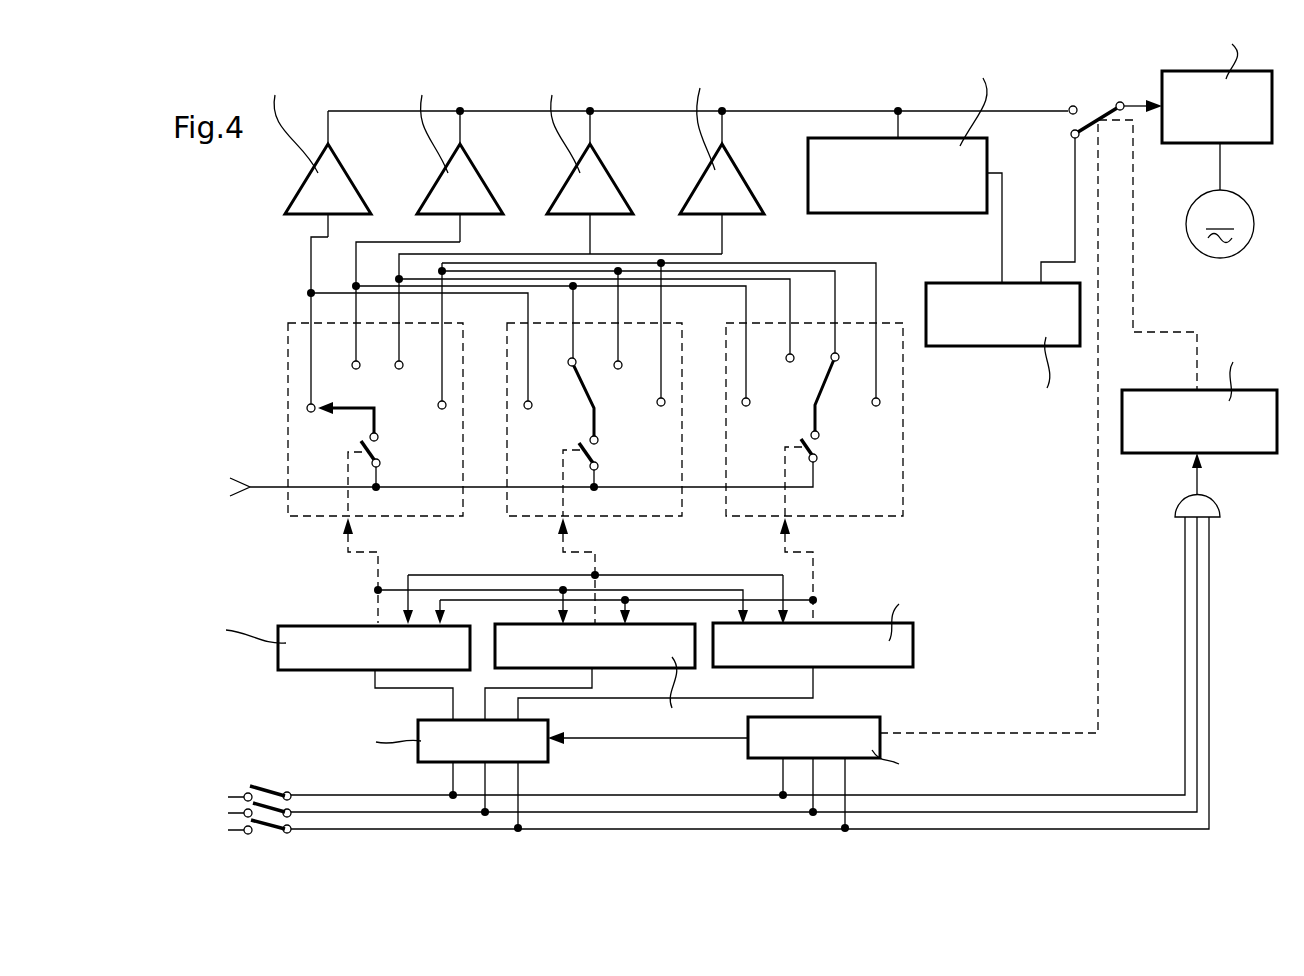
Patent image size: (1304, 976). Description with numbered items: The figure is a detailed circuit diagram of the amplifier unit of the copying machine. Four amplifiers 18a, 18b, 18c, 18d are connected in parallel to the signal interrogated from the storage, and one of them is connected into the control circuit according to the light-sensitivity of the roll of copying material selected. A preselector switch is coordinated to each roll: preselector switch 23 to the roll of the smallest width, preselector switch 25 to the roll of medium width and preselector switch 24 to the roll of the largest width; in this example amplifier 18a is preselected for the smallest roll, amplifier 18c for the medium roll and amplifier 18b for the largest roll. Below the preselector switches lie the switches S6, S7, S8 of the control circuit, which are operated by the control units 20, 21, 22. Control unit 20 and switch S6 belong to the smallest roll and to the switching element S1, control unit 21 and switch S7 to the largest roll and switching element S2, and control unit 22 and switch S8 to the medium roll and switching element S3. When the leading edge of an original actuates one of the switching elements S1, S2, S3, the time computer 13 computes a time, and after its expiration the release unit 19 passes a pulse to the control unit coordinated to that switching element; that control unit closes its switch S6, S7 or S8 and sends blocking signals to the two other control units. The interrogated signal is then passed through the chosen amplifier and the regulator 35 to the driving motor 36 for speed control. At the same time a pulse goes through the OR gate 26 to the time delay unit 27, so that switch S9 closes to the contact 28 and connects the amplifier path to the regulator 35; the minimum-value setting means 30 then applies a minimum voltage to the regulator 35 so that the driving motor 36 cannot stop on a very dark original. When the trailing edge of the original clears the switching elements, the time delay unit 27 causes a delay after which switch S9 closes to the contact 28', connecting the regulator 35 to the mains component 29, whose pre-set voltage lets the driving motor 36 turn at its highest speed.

The amplifier 18a is at (346, 194).
The amplifier 18b is at (478, 194).
The amplifier 18c is at (606, 194).
The amplifier 18d is at (733, 191).
The minimum-value setting means 30 is at (849, 198).
The mains component 29 is at (957, 333).
The contact 28 is at (1057, 98).
The contact 28' is at (1058, 202).
The switch S9 is at (1120, 108).
The regulator 35 is at (1249, 129).
The driving motor 36 is at (1198, 219).
The preselector switch 23 is at (377, 428).
The preselector switch 24 is at (597, 425).
The preselector switch 25 is at (818, 423).
The switch S6 is at (385, 466).
The switch S7 is at (604, 466).
The switch S8 is at (824, 450).
The control unit 20 is at (320, 660).
The control unit 21 is at (631, 653).
The control unit 22 is at (758, 653).
The release unit 19 is at (427, 750).
The time computer 13 is at (752, 748).
The time delay unit 27 is at (1244, 440).
The OR gate 26 is at (1182, 506).
The switching element S1 is at (685, 660).
The switching element S2 is at (691, 669).
The switching element S3 is at (697, 678).